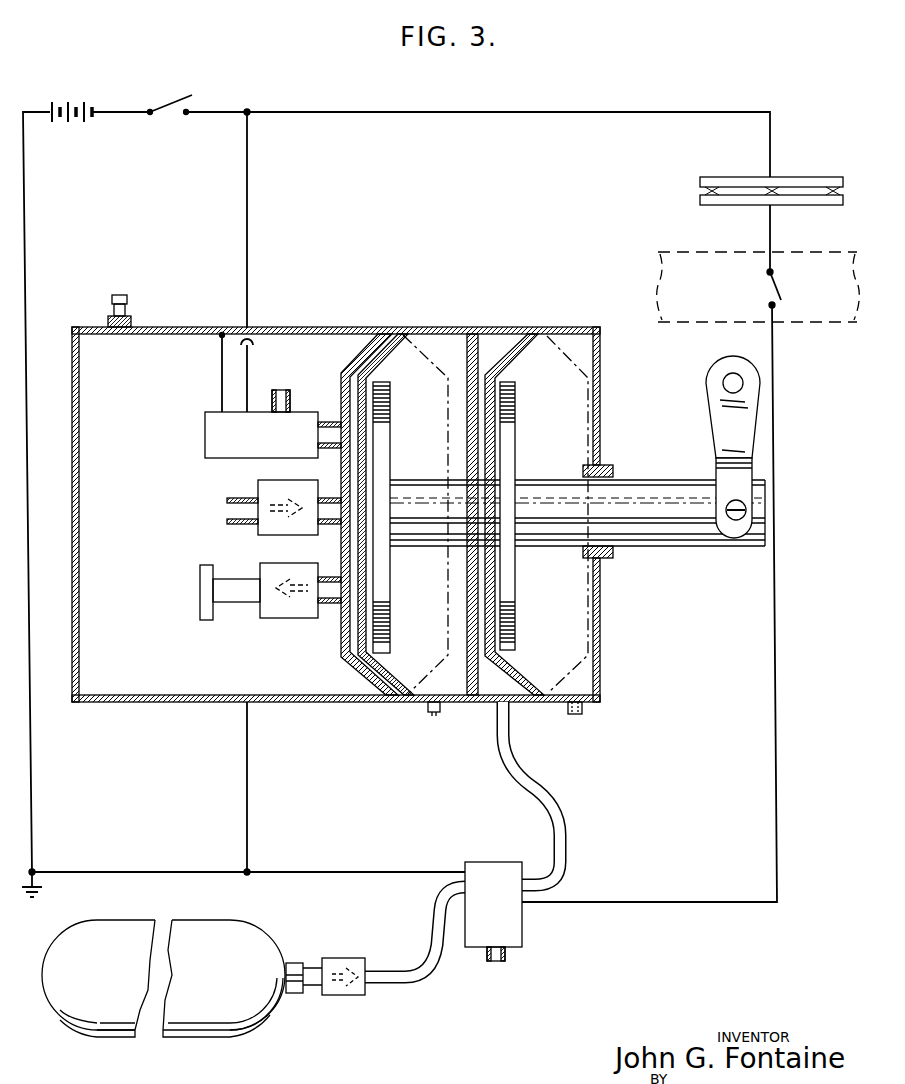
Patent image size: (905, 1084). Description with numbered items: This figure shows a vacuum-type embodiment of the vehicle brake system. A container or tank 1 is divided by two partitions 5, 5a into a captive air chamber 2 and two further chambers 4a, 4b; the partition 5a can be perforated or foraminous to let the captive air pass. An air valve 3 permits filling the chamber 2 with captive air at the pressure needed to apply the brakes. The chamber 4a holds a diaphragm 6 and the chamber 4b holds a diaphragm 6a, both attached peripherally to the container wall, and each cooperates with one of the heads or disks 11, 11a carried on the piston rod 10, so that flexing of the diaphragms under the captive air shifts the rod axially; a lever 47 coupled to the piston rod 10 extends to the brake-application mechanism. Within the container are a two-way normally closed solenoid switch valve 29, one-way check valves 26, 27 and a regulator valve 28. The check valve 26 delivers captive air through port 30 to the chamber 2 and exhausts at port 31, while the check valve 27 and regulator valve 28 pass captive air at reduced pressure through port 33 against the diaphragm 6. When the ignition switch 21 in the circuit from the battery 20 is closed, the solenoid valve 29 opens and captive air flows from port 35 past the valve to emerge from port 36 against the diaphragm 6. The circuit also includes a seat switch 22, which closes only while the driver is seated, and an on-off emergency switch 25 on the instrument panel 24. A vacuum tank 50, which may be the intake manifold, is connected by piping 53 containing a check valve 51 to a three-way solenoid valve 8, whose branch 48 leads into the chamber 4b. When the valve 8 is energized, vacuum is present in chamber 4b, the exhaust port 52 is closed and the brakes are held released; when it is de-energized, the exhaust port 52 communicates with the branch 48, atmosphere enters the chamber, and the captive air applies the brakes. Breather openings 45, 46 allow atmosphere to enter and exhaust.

The container or tank 1 is at (175, 342).
The captive air chamber 2 is at (87, 375).
The air valve 3 is at (128, 306).
The chamber 4a is at (388, 333).
The chamber 4b is at (492, 345).
The partition 5 is at (349, 364).
The partition 5a is at (468, 410).
The diaphragm 6 is at (388, 357).
The diaphragm 6a is at (525, 360).
The three-way solenoid valve 8 is at (480, 870).
The piston rod 10 is at (637, 490).
The head or disk 11 is at (380, 457).
The head or disk 11a is at (510, 438).
The battery 20 is at (80, 124).
The ignition switch 21 is at (166, 101).
The seat switch 22 is at (752, 163).
The instrument panel 24 is at (708, 240).
The on-off emergency switch 25 is at (768, 283).
The one-way check valve 26 is at (268, 492).
The one-way check valve 27 is at (270, 612).
The regulator valve 28 is at (202, 590).
The two-way normally closed solenoid switch valve 29 is at (216, 428).
The port 30 is at (330, 523).
The port 31 is at (228, 513).
The port 33 is at (330, 606).
The port 35 is at (283, 392).
The port 36 is at (324, 433).
The breather opening 45 is at (432, 717).
The breather opening 46 is at (580, 714).
The lever 47 is at (707, 400).
The branch of the piping 48 is at (548, 765).
The vacuum tank 50 is at (142, 932).
The check valve 51 is at (344, 962).
The exhaust port 52 is at (497, 968).
The piping 53 is at (392, 975).